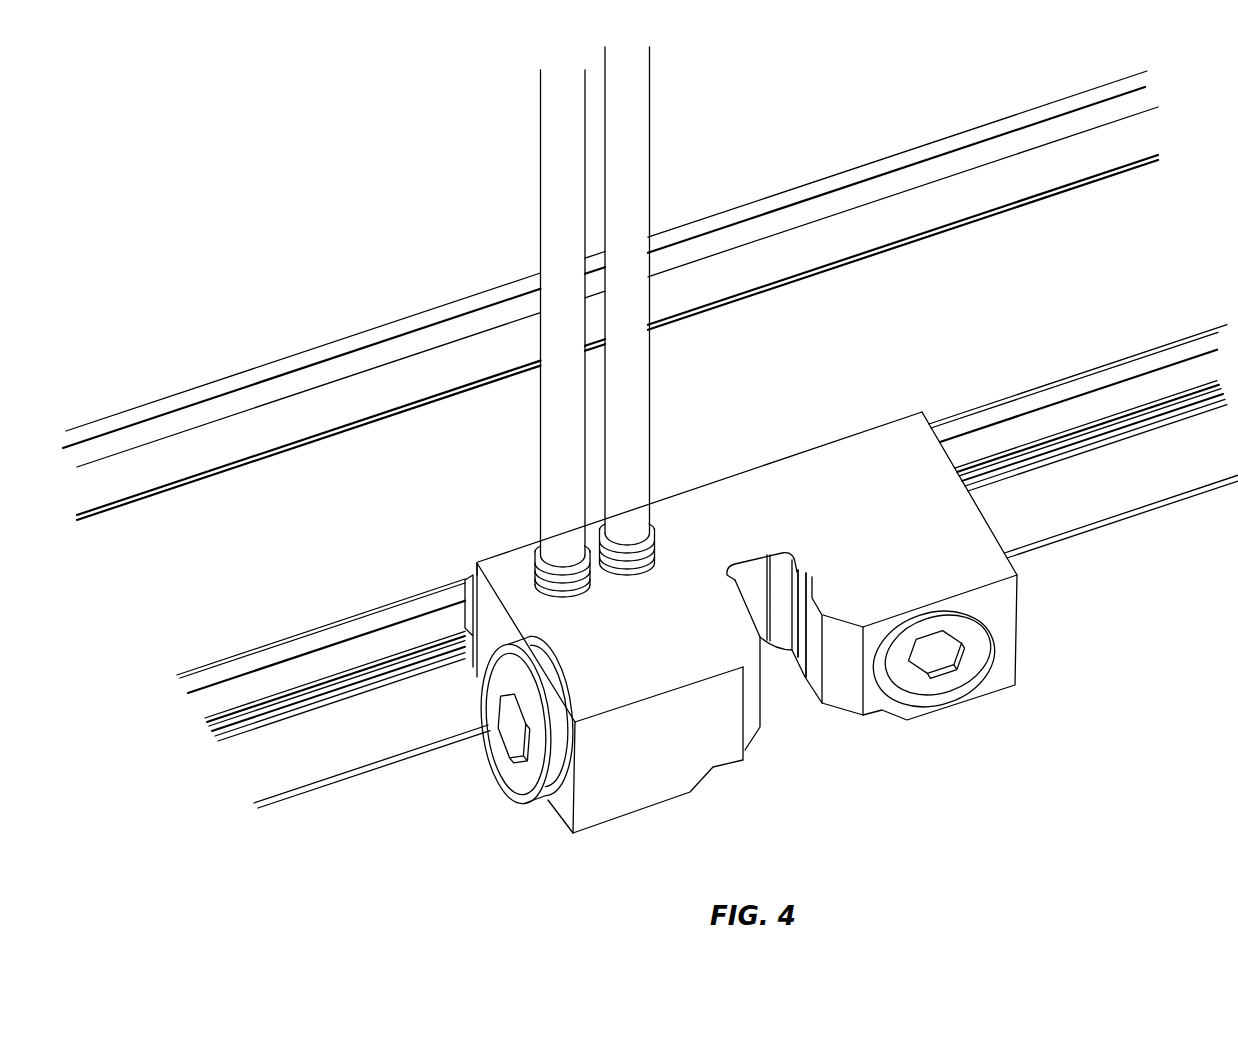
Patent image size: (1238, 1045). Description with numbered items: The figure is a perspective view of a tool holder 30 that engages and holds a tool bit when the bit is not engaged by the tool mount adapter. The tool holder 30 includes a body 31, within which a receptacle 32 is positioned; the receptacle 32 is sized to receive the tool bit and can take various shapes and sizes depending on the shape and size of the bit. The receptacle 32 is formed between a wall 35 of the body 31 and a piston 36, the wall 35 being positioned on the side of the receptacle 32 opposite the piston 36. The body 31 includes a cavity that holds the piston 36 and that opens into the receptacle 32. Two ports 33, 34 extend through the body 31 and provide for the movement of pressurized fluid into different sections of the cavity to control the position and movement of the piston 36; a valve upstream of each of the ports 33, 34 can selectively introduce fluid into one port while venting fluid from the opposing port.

The tool holder 30 is at (856, 401).
The body 31 is at (893, 453).
The receptacle 32 is at (796, 731).
The port 33 is at (655, 540).
The port 34 is at (536, 565).
The wall 35 is at (749, 613).
The piston 36 is at (811, 645).